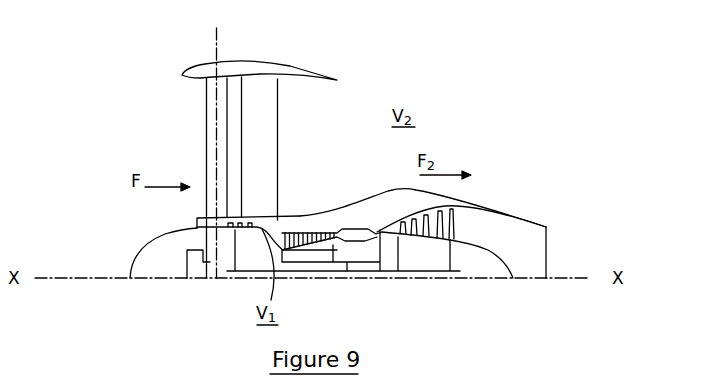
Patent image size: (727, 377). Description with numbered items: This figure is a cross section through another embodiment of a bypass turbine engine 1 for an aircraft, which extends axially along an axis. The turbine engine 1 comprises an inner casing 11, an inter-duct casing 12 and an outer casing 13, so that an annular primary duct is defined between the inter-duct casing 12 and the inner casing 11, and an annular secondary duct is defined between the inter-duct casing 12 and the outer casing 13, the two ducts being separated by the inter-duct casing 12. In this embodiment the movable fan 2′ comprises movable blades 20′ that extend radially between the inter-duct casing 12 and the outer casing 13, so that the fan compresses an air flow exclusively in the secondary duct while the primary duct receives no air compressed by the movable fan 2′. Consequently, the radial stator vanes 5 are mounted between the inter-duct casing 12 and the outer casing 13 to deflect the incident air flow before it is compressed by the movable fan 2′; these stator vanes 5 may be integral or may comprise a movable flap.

The turbine engine 1 is at (82, 135).
The outer casing 13 is at (242, 65).
The radial stator vanes 5 is at (207, 110).
The movable blades 20′ is at (263, 153).
The movable fan 2′ is at (293, 125).
The inter-duct casing 12 is at (300, 216).
The inner casing 11 is at (147, 258).